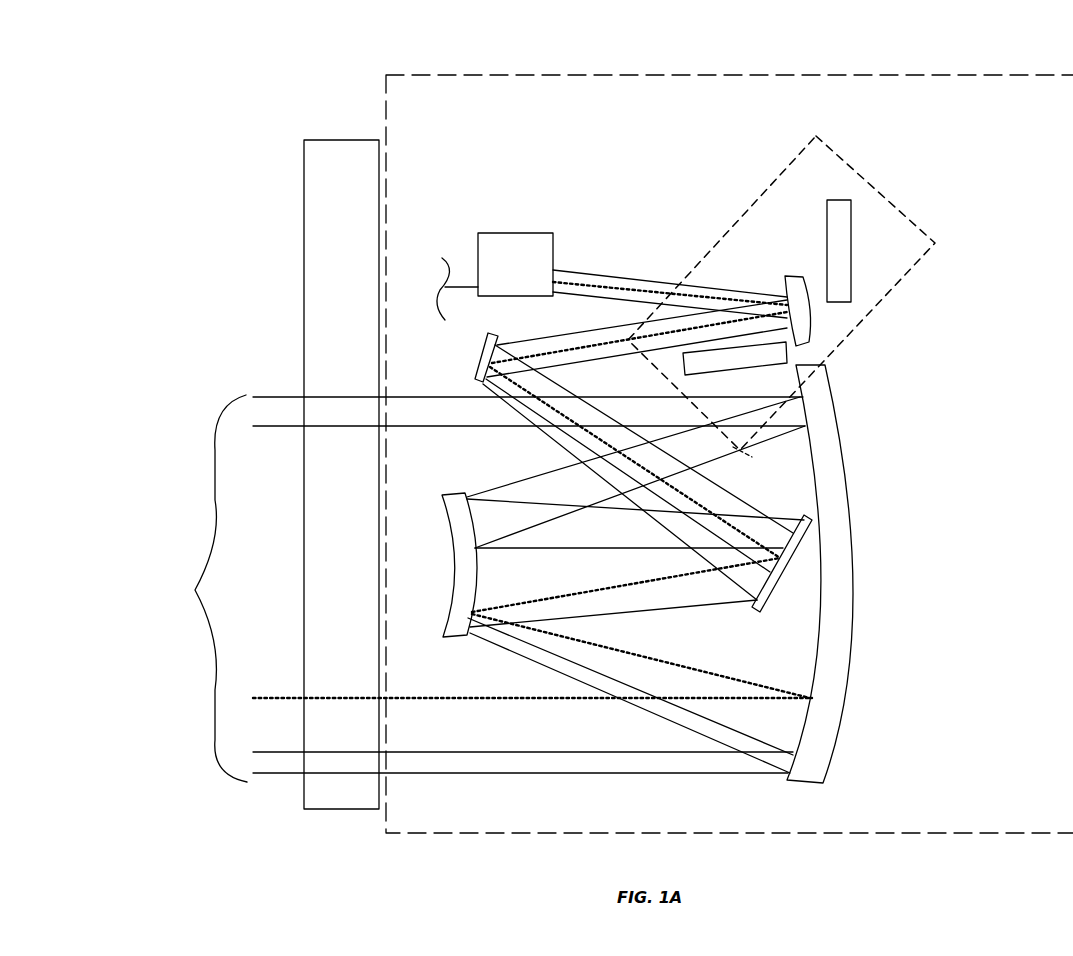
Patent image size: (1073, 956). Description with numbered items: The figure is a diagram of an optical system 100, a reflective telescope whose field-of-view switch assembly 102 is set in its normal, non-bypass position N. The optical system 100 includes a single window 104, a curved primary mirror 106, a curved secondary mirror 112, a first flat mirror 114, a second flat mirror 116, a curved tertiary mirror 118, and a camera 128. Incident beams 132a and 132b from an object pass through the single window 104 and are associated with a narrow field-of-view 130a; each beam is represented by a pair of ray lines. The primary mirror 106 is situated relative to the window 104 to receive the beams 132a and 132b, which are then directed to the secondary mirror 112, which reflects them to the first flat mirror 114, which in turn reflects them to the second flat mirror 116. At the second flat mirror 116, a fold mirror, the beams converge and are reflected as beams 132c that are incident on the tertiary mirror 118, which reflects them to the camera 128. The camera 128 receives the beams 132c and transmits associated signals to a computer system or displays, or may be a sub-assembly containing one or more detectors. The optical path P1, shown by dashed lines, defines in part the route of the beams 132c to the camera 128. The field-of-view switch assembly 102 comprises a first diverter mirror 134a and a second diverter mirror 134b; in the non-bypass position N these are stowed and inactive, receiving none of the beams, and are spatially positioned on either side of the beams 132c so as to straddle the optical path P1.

The optical system 100 is at (508, 68).
The field-of-view switch assembly 102 is at (856, 177).
The single window 104 is at (317, 206).
The curved primary mirror 106 is at (827, 735).
The curved secondary mirror 112 is at (447, 603).
The first flat mirror 114 is at (777, 575).
The second flat mirror 116 is at (484, 362).
The curved tertiary mirror 118 is at (810, 323).
The camera 128 is at (521, 243).
The narrow field-of-view 130a is at (198, 588).
The incident beams 132a is at (256, 788).
The incident beams 132b is at (273, 378).
The reflected beams 132c is at (543, 336).
The first diverter mirror 134a is at (851, 260).
The second diverter mirror 134b is at (787, 352).
The normal, non-bypass position N is at (815, 126).
The optical path P1 is at (742, 534).